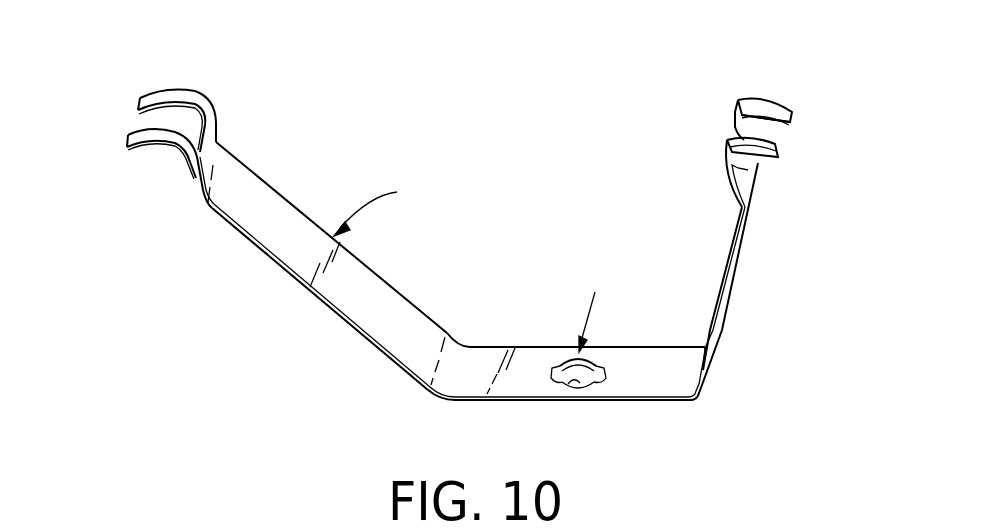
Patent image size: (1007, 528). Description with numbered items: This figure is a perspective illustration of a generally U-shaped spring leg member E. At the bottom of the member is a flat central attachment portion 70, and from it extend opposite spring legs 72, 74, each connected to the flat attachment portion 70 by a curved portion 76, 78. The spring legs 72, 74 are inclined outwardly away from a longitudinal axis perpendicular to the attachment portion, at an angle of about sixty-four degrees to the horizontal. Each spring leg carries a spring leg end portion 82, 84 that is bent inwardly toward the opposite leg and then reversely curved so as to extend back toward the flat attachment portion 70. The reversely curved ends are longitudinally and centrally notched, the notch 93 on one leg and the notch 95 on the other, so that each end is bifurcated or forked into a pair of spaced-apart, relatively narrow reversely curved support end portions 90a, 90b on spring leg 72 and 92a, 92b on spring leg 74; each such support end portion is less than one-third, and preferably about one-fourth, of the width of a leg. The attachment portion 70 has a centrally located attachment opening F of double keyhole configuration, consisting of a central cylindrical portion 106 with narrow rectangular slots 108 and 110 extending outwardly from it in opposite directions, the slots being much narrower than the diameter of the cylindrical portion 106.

The flat central attachment portion 70 is at (482, 355).
The spring leg 72 is at (290, 282).
The spring leg 74 is at (738, 270).
The curved portion 76 is at (445, 385).
The curved portion 78 is at (683, 390).
The spring leg end portion 82 is at (217, 150).
The spring leg end portion 84 is at (728, 190).
The reversely curved support end portion 90a is at (142, 135).
The reversely curved support end portion 90b is at (170, 92).
The reversely curved support end portion 92a is at (778, 147).
The reversely curved support end portion 92b is at (760, 103).
The notch 93 is at (142, 127).
The notch 95 is at (770, 125).
The central cylindrical portion 106 is at (578, 390).
The rectangular slot 108 is at (555, 380).
The rectangular slot 110 is at (590, 388).
The spring leg member E is at (373, 207).
The attachment opening F is at (592, 311).